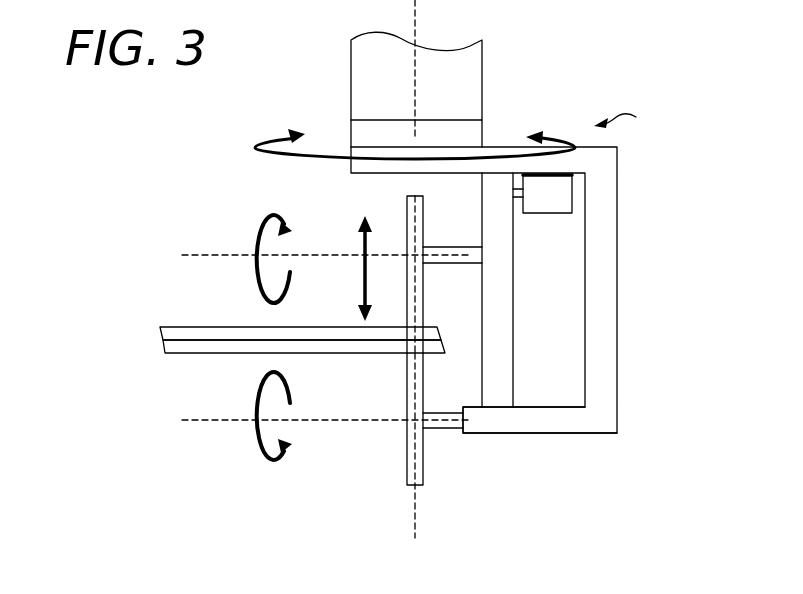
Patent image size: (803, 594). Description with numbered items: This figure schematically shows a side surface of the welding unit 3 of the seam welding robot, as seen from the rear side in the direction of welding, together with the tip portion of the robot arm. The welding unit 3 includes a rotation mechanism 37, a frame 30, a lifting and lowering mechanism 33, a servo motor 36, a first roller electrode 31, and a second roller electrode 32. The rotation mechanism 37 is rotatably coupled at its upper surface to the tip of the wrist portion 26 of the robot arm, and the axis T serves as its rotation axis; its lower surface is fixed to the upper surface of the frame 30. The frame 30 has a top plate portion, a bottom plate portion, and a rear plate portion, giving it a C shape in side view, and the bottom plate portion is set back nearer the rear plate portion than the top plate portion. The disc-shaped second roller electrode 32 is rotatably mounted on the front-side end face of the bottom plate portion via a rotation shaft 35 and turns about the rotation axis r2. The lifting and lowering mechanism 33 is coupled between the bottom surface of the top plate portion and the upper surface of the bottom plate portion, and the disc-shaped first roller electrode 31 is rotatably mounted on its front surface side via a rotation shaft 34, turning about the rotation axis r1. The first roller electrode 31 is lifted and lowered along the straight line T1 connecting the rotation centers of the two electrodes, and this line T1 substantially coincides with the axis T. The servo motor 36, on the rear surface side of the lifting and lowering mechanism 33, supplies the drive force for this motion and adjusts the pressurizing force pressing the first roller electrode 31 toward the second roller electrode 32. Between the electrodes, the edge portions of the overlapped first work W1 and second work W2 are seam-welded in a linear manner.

The welding unit 3 is at (624, 115).
The wrist portion 26 is at (470, 76).
The rotation mechanism 37 is at (470, 135).
The frame 30 is at (617, 303).
The first roller electrode 31 is at (408, 206).
The second roller electrode 32 is at (408, 453).
The lifting and lowering mechanism 33 is at (498, 382).
The rotation shaft 34 is at (452, 247).
The rotation shaft 35 is at (448, 428).
The servo motor 36 is at (557, 193).
The axis T is at (415, 14).
The straight line T1 is at (415, 520).
The rotation axis r1 is at (207, 253).
The rotation axis r2 is at (207, 422).
The first work W1 is at (165, 335).
The second work W2 is at (165, 347).